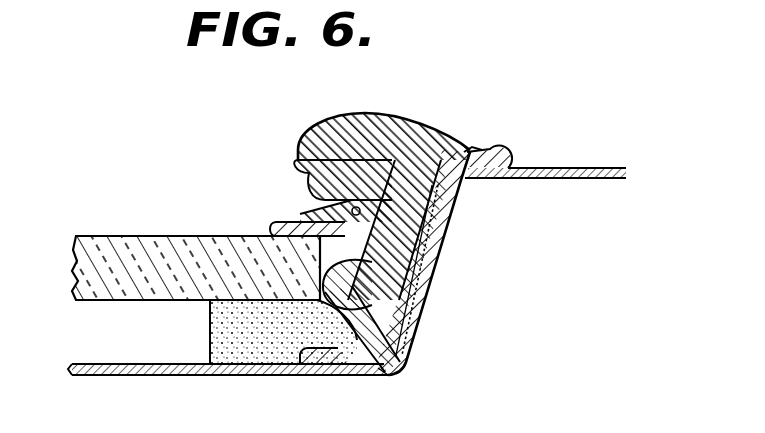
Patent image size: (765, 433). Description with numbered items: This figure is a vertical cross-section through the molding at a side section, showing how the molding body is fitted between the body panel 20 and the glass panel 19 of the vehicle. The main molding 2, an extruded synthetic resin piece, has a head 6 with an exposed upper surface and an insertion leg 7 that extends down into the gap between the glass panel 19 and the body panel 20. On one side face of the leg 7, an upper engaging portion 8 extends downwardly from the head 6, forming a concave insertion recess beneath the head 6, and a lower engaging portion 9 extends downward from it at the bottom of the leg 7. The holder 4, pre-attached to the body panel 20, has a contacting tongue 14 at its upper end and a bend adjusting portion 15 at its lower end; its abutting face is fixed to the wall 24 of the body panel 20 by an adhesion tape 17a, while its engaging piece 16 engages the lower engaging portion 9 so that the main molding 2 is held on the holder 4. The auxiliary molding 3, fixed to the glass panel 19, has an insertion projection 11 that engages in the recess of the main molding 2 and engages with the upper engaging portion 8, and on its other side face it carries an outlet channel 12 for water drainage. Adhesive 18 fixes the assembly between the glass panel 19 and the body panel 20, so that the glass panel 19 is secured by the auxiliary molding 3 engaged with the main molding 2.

The main molding 2 is at (356, 112).
The auxiliary molding 3 is at (378, 160).
The holder 4 is at (478, 151).
The head 6 is at (357, 118).
The insertion leg 7 is at (423, 280).
The upper engaging portion 8 is at (352, 212).
The lower engaging portion 9 is at (390, 300).
The insertion projection 11 is at (440, 197).
The outlet channel 12 is at (345, 207).
The contacting tongue 14 is at (505, 158).
The bend adjusting portion 15 is at (332, 377).
The engaging piece 16 is at (390, 370).
The adhesion tape 17a is at (430, 238).
The adhesive 18 is at (251, 348).
The glass panel 19 is at (118, 243).
The body panel 20 is at (116, 373).
The wall 24 is at (430, 268).